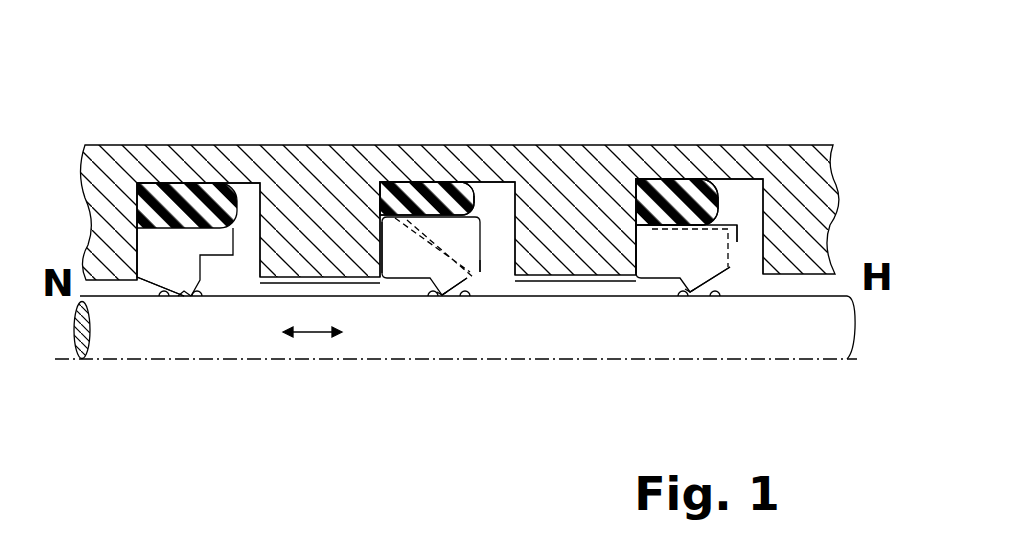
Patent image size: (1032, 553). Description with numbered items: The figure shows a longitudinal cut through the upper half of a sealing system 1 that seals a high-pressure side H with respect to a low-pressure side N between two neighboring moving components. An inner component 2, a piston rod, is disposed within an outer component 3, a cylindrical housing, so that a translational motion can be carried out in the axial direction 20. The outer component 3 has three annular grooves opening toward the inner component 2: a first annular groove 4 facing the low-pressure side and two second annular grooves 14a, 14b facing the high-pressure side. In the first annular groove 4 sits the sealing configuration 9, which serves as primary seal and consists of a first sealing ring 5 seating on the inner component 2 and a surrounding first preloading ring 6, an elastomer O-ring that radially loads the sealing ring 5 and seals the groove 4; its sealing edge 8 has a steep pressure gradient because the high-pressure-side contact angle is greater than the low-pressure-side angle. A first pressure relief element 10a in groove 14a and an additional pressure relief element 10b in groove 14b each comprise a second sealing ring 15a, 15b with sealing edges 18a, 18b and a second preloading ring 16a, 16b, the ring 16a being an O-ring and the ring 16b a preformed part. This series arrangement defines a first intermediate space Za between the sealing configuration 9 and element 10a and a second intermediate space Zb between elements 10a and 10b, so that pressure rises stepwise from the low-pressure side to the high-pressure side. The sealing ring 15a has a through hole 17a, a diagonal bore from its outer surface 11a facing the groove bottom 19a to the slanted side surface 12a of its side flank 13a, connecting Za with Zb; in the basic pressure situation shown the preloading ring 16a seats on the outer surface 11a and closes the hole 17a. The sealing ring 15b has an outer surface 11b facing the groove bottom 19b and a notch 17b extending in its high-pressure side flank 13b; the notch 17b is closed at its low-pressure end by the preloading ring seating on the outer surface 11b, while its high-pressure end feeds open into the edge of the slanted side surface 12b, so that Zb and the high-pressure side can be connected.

The sealing system 1 is at (155, 93).
The inner component 2 is at (846, 357).
The outer component 3 is at (818, 160).
The first annular groove 4 is at (247, 205).
The first sealing ring 5 is at (152, 278).
The first preloading ring 6 is at (160, 183).
The sealing edge 8 is at (183, 296).
The sealing configuration 9 is at (187, 180).
The first pressure relief element 10a is at (434, 178).
The additional pressure relief element 10b is at (690, 174).
The outer surface 11a is at (477, 208).
The outer surface 11b is at (723, 212).
The side surface 12a is at (470, 280).
The slanted side surface 12b is at (712, 282).
The side flank 13a is at (490, 246).
The high pressure side flank 13b is at (738, 238).
The second annular groove 14a is at (507, 192).
The additional second annular groove 14b is at (765, 196).
The second sealing ring 15a is at (390, 283).
The second sealing ring 15b is at (662, 258).
The second preloading ring 16a is at (393, 186).
The second preloading ring 16b is at (652, 182).
The through hole 17a is at (432, 243).
The notch 17b is at (737, 240).
The sealing edge 18a is at (439, 293).
The sealing edge 18b is at (692, 294).
The groove bottom 19a is at (488, 190).
The groove bottom 19b is at (738, 190).
The axial direction 20 is at (312, 338).
The first intermediate space Za is at (273, 285).
The second intermediate space Zb is at (563, 282).